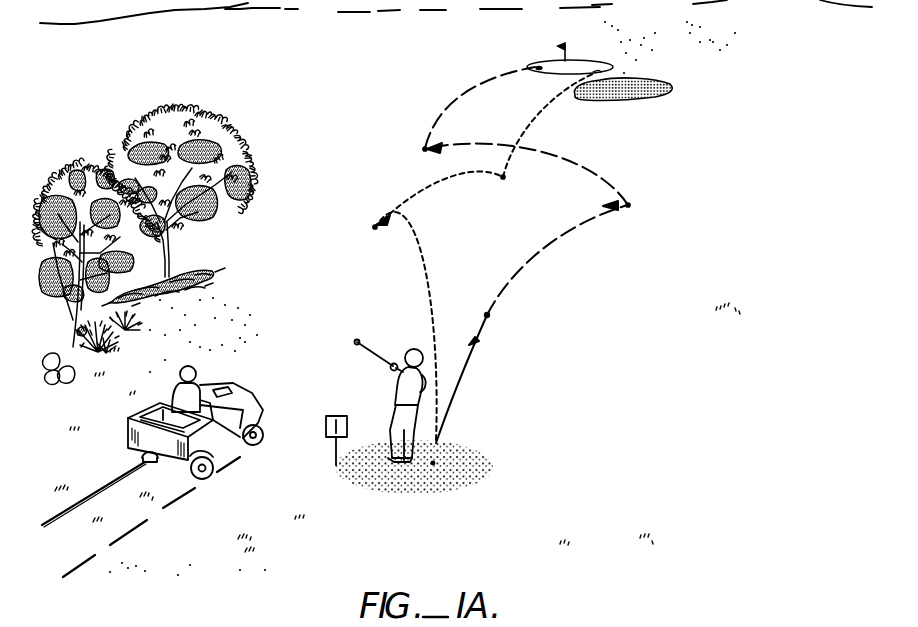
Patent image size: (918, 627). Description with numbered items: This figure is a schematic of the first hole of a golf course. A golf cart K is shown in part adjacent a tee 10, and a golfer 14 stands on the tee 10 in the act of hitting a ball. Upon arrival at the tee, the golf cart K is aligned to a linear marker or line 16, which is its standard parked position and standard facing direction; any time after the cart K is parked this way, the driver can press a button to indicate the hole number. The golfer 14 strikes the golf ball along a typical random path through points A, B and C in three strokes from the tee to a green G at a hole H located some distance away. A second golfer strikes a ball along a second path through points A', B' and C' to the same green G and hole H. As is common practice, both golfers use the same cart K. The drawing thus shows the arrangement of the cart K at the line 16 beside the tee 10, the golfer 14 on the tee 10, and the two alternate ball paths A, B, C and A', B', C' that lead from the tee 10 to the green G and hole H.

The tee 10 is at (481, 458).
The golfer 14 is at (393, 390).
The linear marker or line 16 is at (133, 527).
The golf cart K is at (243, 387).
The path point A is at (645, 209).
The path point A' is at (354, 236).
The path point B is at (404, 153).
The path point B' is at (516, 191).
The path point C is at (527, 53).
The path point C' is at (618, 51).
The green G is at (557, 67).
The hole H is at (566, 46).